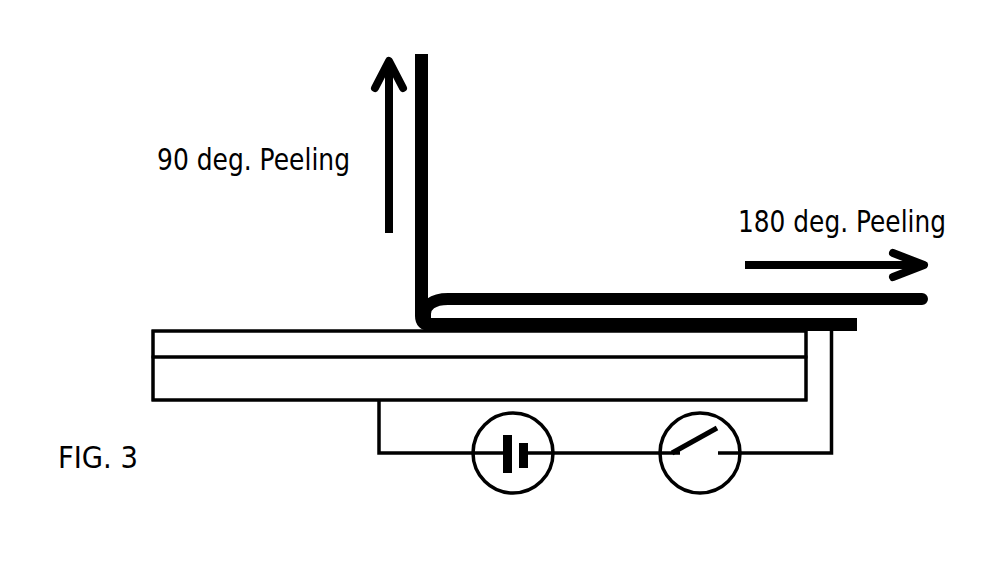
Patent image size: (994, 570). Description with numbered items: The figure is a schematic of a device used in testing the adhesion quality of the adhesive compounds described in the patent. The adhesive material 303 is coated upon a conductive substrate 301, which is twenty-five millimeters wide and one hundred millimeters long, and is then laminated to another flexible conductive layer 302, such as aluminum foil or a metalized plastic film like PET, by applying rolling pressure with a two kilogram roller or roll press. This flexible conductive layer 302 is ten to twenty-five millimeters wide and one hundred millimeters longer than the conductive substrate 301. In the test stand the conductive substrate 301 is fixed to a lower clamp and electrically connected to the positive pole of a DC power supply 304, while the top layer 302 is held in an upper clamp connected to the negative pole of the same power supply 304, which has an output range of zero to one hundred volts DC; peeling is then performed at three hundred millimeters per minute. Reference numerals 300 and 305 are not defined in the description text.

The peeling test assembly 300 is at (184, 296).
The conductive substrate 301 is at (206, 403).
The flexible conductive layer 302 is at (432, 133).
The adhesive material 303 is at (308, 331).
The power supply 304 is at (477, 475).
The switch 305 is at (737, 472).